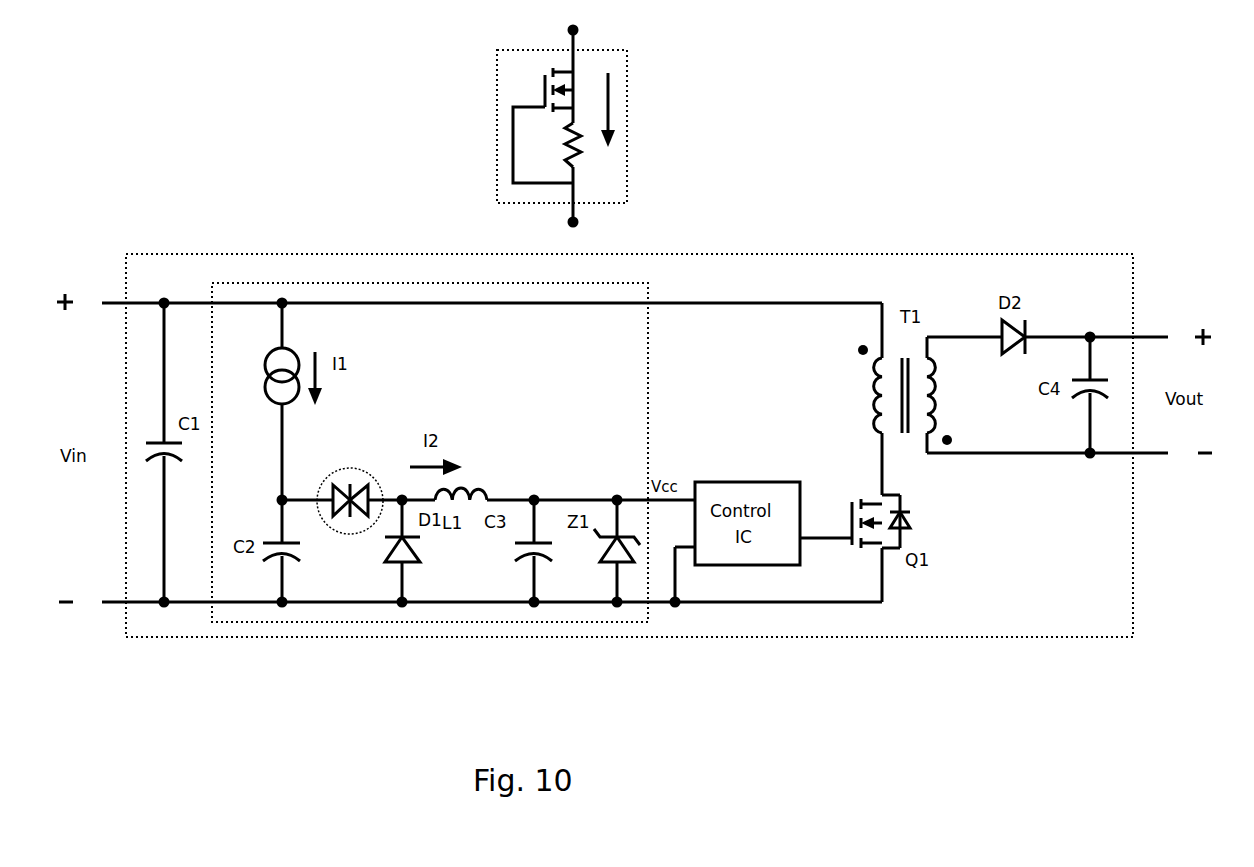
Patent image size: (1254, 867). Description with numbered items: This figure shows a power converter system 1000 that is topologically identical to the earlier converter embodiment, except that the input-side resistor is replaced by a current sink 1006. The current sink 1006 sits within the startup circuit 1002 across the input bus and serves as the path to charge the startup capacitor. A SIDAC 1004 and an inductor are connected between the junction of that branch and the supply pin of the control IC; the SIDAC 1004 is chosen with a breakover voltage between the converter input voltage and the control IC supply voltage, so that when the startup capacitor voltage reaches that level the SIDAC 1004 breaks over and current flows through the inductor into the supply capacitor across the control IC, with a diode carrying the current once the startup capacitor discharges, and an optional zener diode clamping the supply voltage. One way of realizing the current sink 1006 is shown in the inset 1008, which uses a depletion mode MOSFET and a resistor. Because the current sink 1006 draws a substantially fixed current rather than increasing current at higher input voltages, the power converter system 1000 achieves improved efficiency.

The power converter system 1000 is at (752, 246).
The startup circuit 1002 is at (412, 275).
The SIDAC 1004 is at (358, 460).
The current sink 1006 is at (274, 400).
The current sink realization 1008 is at (490, 116).